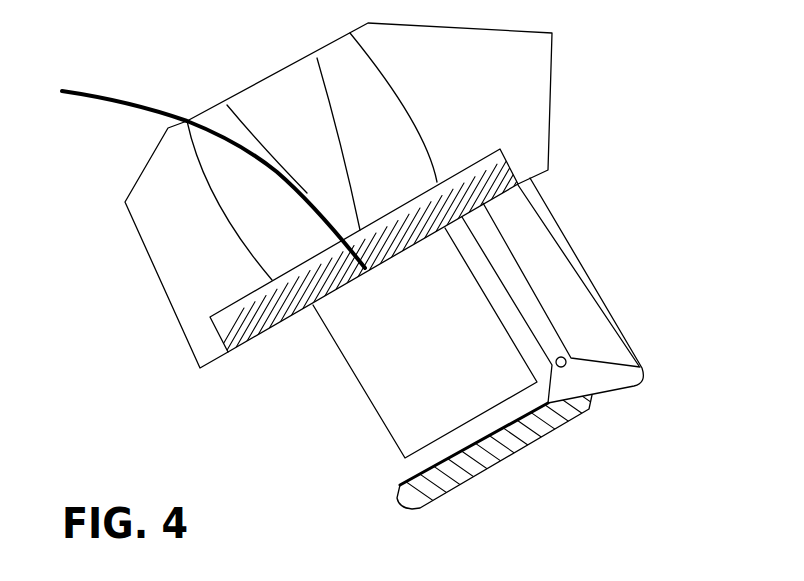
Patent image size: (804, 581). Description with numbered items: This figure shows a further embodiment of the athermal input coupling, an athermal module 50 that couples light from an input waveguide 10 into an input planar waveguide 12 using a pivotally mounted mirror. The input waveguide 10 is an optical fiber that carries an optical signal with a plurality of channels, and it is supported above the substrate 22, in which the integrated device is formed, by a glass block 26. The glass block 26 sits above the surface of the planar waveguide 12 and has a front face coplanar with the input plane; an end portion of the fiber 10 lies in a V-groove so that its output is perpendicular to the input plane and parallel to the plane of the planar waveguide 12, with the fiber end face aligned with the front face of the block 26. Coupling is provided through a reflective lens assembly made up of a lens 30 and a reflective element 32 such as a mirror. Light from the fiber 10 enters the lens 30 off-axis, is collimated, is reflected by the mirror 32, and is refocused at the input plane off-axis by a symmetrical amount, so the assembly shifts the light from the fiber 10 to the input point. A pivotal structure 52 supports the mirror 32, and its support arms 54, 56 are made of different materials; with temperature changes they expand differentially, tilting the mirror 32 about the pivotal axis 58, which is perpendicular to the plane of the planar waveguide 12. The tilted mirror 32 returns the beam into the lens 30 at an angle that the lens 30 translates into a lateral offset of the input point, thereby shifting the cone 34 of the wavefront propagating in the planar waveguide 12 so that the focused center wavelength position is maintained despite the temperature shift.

The input waveguide 10 is at (117, 105).
The input planar waveguide 12 is at (392, 127).
The substrate 22 is at (479, 83).
The glass block 26 is at (225, 308).
The lens 30 is at (328, 333).
The reflective element 32 is at (410, 482).
The cone 34 is at (285, 110).
The athermal module 50 is at (665, 353).
The pivotal structure 52 is at (583, 400).
The support arm 54 is at (505, 265).
The support arm 56 is at (583, 290).
The pivotal axis 58 is at (565, 366).